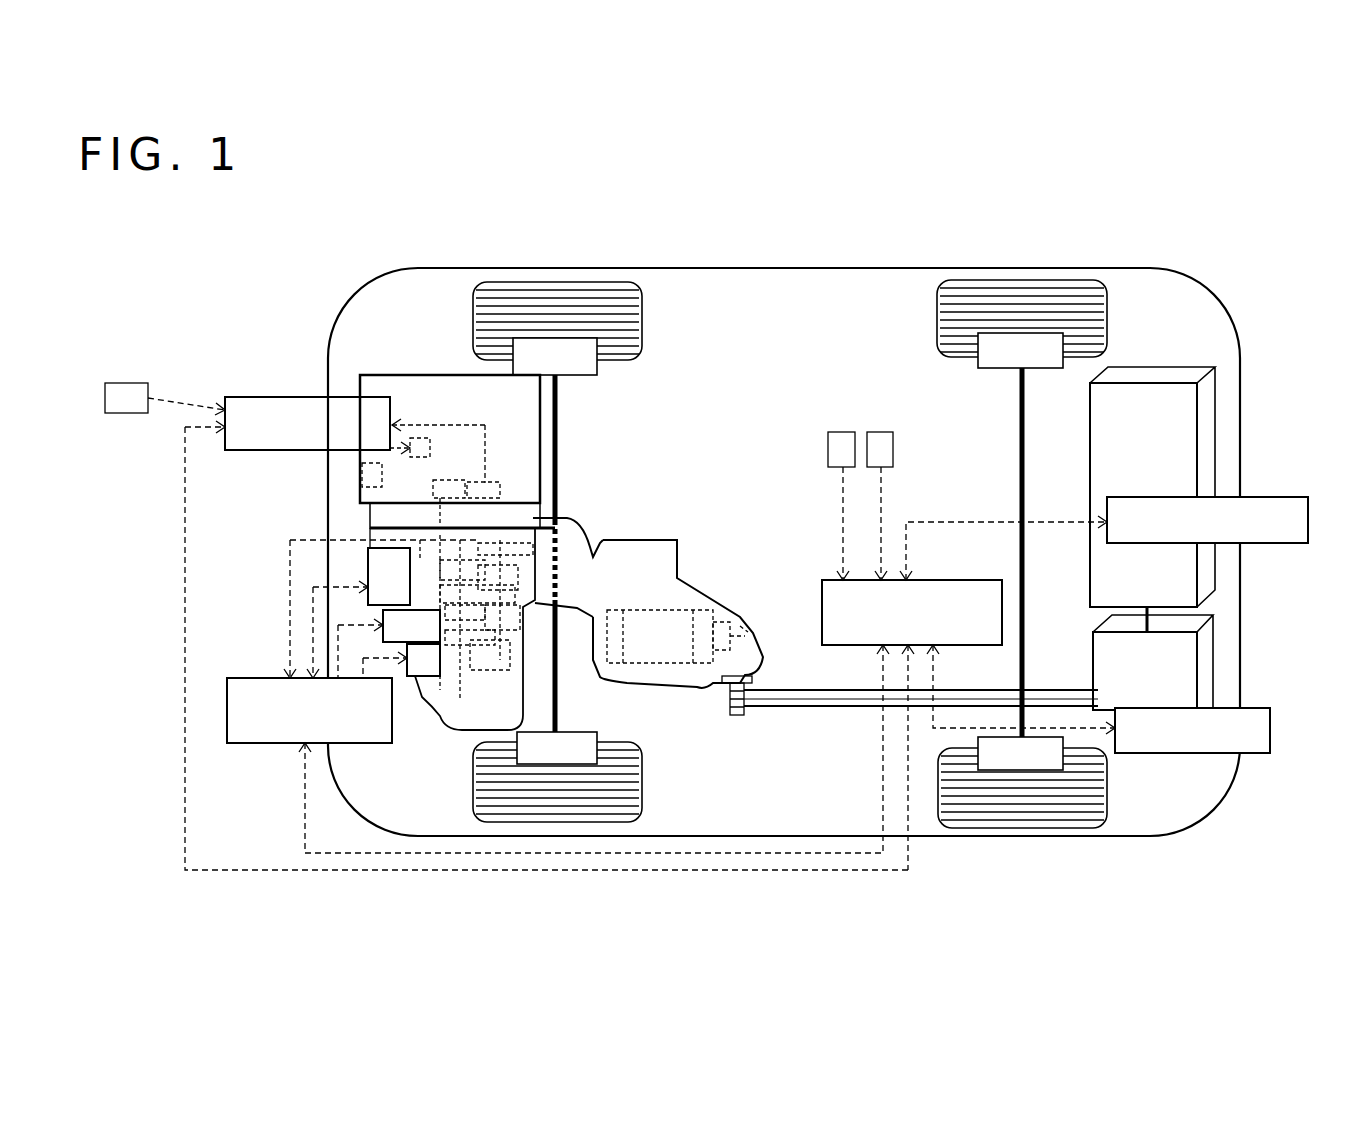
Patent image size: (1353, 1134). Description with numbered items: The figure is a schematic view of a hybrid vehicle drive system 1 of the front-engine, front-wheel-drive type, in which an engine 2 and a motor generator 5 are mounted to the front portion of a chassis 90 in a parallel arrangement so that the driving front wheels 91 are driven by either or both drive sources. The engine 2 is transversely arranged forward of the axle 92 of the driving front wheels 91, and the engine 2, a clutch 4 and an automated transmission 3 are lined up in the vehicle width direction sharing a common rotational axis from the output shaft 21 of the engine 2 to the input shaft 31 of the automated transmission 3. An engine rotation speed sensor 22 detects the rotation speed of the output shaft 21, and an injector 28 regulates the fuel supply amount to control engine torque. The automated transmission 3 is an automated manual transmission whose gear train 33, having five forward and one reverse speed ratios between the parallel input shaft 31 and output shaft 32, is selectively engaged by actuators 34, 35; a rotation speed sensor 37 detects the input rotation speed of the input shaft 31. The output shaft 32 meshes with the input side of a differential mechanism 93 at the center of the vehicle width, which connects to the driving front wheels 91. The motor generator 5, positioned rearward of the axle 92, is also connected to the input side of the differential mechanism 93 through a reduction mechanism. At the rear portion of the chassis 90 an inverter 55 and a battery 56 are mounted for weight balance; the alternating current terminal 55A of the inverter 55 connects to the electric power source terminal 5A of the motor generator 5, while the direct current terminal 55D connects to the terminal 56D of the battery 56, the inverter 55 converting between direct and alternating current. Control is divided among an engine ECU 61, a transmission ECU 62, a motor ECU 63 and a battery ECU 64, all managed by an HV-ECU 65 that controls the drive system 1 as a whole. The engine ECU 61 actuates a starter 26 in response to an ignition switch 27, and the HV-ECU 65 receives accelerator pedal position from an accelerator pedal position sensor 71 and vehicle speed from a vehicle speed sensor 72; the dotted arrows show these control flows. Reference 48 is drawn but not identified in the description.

The hybrid vehicle drive system 1 is at (374, 204).
The engine 2 is at (415, 385).
The output shaft 21 is at (425, 440).
The engine rotation speed sensor 22 is at (497, 485).
The starter 26 is at (370, 475).
The ignition switch 27 is at (130, 383).
The injector 28 is at (340, 400).
The automated transmission 3 is at (490, 660).
The input shaft 31 is at (455, 670).
The output shaft 32 is at (510, 660).
The gear train 33 is at (470, 665).
The actuator 34 is at (400, 650).
The actuator 35 is at (400, 614).
The rotation speed sensor 37 is at (372, 548).
The clutch 4 is at (380, 520).
The clutch actuator 48 is at (376, 568).
The motor generator 5 is at (678, 625).
The electric power source terminal 5A is at (748, 716).
The inverter 55 is at (1203, 645).
The alternating current terminal 55A is at (1093, 695).
The direct current terminal 55D is at (1135, 645).
The battery 56 is at (1180, 425).
The terminal 56D is at (1145, 590).
The engine electronic control unit 61 is at (298, 405).
The transmission electronic control unit 62 is at (275, 745).
The motor electronic control unit 63 is at (1188, 755).
The battery electronic control unit 64 is at (1255, 547).
The hybrid vehicle electronic control unit 65 is at (830, 588).
The accelerator pedal position sensor 71 is at (843, 438).
The vehicle speed sensor 72 is at (882, 438).
The chassis 90 is at (1207, 290).
The driving front wheels 91 is at (555, 300).
The axle 92 is at (560, 425).
The differential mechanism 93 is at (578, 538).